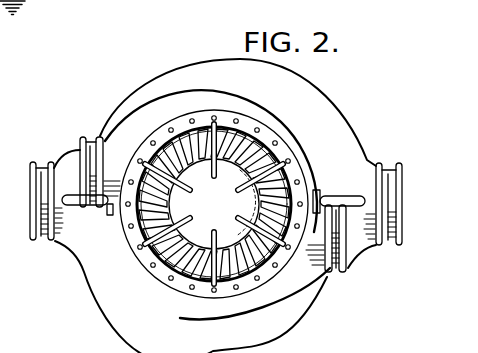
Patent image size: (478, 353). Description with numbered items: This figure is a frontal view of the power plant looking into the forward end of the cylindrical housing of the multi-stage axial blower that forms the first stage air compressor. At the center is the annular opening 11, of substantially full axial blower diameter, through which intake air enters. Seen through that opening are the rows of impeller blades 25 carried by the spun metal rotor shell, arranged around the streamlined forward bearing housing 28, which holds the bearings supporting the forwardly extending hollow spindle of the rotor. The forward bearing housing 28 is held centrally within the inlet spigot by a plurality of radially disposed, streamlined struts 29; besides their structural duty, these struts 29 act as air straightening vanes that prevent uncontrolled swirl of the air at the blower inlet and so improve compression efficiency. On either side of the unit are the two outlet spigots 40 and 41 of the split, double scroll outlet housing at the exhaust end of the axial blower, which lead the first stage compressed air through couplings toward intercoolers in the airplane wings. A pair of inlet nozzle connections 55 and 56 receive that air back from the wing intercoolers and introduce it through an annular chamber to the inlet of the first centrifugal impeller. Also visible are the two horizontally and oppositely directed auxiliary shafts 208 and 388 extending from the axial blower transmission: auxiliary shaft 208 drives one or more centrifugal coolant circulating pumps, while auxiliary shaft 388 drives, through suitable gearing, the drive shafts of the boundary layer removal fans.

The annular opening 11 is at (251, 268).
The impeller blades 25 is at (263, 157).
The forward bearing housing 28 is at (225, 202).
The streamlined struts 29 is at (148, 151).
The outlet spigot 40 is at (82, 156).
The outlet spigot 41 is at (346, 269).
The inlet nozzle connection 55 is at (33, 203).
The inlet nozzle connection 56 is at (402, 202).
The auxiliary shaft 208 is at (79, 208).
The auxiliary shaft 388 is at (352, 197).